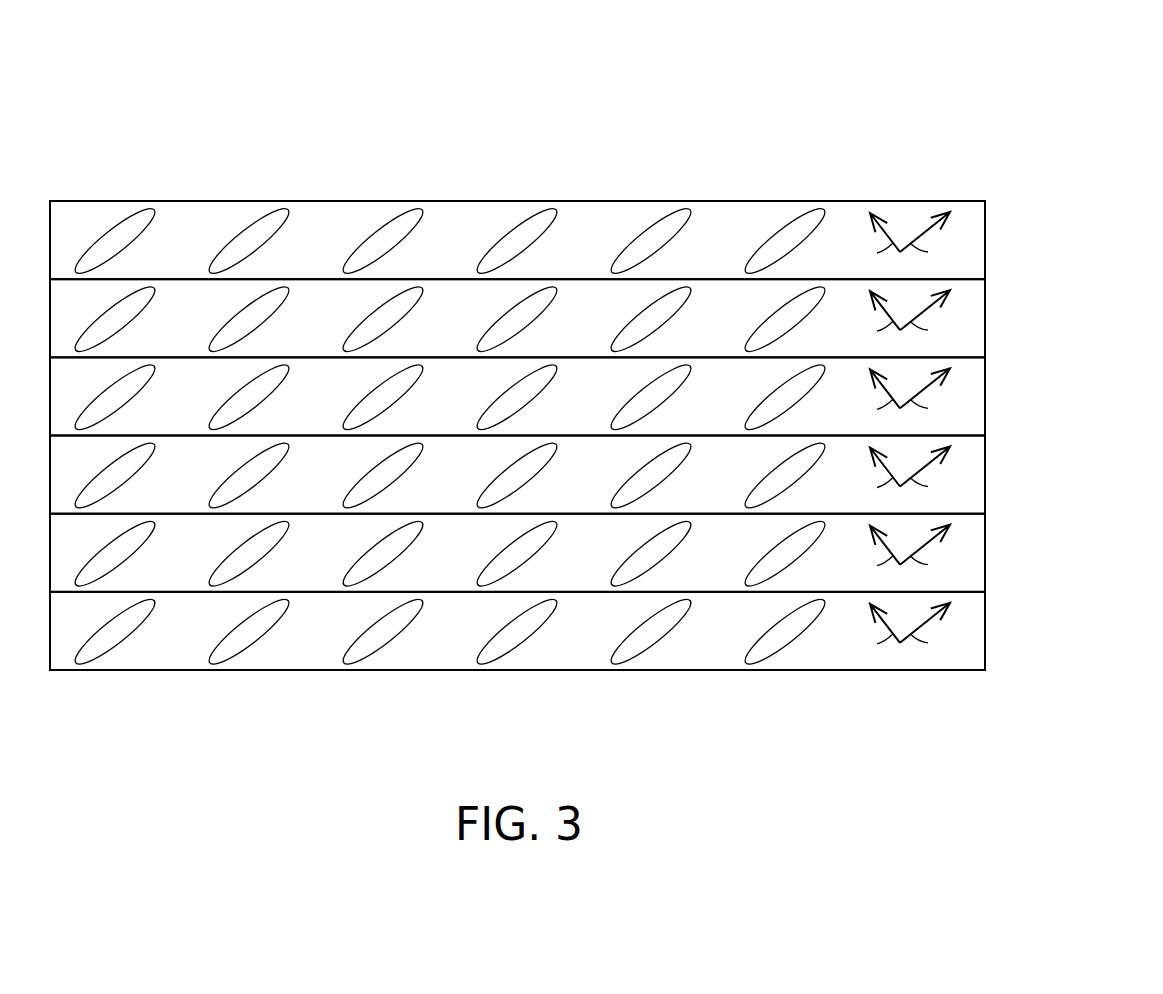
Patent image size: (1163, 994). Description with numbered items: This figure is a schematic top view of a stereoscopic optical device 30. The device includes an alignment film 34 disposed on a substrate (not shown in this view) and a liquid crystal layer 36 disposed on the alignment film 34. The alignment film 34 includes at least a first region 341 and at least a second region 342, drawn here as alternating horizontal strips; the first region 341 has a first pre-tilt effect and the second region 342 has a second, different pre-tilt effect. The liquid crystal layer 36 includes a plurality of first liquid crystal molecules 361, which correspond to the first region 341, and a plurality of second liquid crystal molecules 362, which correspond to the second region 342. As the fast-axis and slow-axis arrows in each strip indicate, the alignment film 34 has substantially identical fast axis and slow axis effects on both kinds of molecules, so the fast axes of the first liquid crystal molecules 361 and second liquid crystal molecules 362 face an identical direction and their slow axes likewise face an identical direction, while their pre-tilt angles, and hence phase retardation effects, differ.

The stereoscopic optical device 30 is at (1015, 133).
The alignment film 34 is at (1082, 203).
The first region 341 is at (566, 396).
The second region 342 is at (566, 474).
The liquid crystal layer 36 is at (450, 436).
The first liquid crystal molecules 361 is at (250, 237).
The second liquid crystal molecules 362 is at (250, 632).